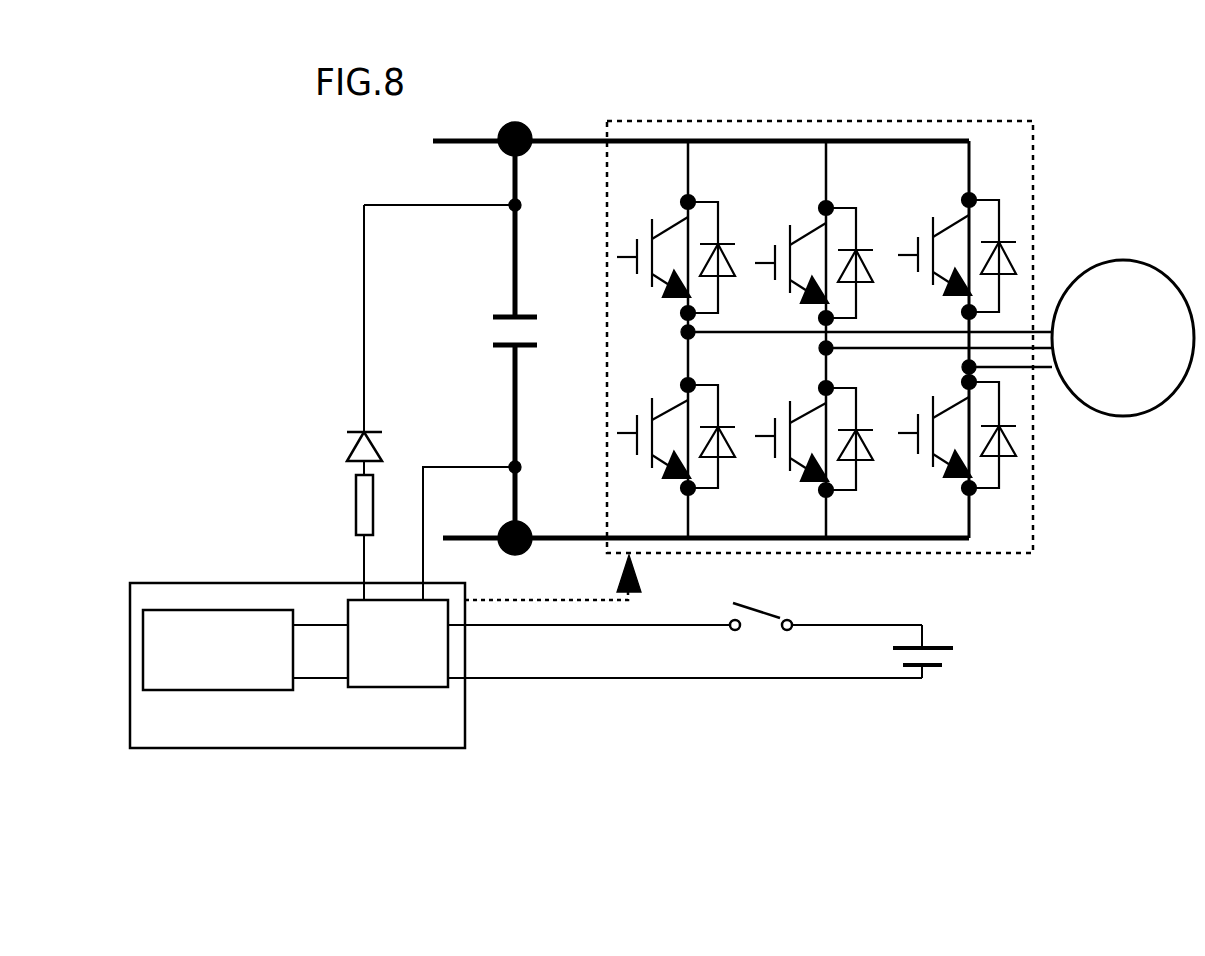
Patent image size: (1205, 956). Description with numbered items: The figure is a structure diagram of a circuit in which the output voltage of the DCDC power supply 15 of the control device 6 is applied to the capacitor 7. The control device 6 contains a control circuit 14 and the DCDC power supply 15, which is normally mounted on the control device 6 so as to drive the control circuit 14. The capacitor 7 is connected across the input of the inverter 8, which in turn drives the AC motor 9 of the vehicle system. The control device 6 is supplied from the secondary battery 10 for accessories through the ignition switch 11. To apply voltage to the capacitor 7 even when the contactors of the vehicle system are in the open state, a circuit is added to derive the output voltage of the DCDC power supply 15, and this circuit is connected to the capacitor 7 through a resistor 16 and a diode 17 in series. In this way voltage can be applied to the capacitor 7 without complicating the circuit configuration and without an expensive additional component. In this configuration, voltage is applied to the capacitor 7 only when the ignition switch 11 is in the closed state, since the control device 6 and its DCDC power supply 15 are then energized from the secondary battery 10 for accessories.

The control device 6 is at (328, 629).
The capacitor 7 is at (505, 313).
The inverter 8 is at (1036, 133).
The AC motor 9 is at (1116, 258).
The secondary battery for accessories 10 is at (960, 655).
The ignition switch 11 is at (772, 608).
The control circuit 14 is at (188, 607).
The DCDC power supply 15 is at (363, 585).
The resistor 16 is at (357, 505).
The diode 17 is at (356, 445).